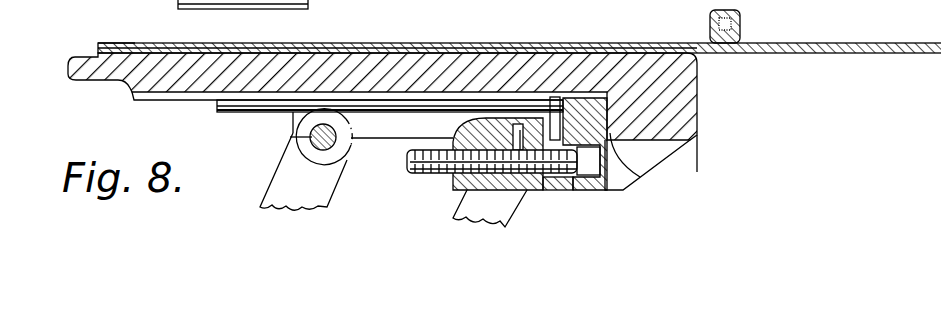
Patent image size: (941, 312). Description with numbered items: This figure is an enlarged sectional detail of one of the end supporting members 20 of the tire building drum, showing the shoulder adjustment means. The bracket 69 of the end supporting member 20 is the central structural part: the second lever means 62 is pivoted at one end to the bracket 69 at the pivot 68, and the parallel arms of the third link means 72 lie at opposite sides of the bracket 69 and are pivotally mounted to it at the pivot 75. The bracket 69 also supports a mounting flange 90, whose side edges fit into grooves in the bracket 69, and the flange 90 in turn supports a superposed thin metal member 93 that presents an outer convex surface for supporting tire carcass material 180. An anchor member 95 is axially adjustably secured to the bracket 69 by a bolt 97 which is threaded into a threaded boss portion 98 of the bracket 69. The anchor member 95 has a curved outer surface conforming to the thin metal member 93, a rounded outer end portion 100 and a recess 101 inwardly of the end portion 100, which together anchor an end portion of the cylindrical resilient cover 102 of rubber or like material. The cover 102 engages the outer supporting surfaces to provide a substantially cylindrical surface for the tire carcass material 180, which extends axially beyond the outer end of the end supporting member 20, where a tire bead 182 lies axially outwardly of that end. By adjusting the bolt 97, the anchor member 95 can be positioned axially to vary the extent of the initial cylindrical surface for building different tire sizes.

The end supporting member 20 is at (423, 100).
The second lever means 62 is at (278, 185).
The pivot 68 is at (293, 137).
The bracket 69 is at (392, 132).
The third link means 72 is at (467, 200).
The pivot 75 is at (520, 137).
The mounting flange 90 is at (247, 112).
The thin metal member 93 is at (193, 98).
The anchor member 95 is at (618, 53).
The bolt 97 is at (553, 184).
The threaded boss portion 98 is at (543, 190).
The rounded outer end portion 100 is at (697, 107).
The recess 101 is at (636, 172).
The cylindrical resilient cover 102 is at (133, 28).
The tire carcass material 180 is at (833, 56).
The tire bead 182 is at (742, 24).